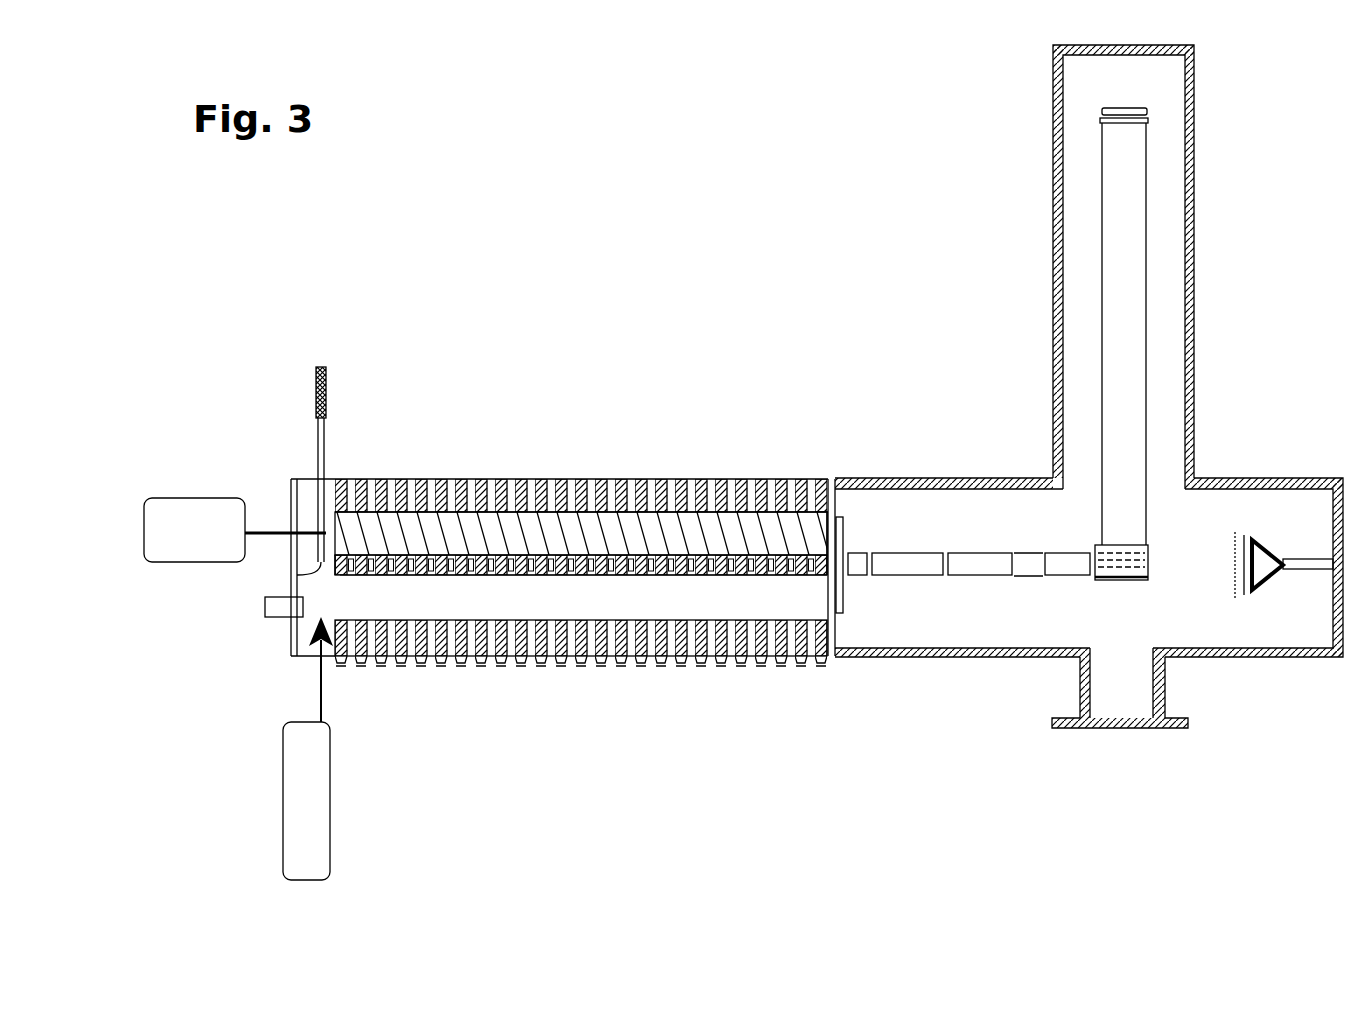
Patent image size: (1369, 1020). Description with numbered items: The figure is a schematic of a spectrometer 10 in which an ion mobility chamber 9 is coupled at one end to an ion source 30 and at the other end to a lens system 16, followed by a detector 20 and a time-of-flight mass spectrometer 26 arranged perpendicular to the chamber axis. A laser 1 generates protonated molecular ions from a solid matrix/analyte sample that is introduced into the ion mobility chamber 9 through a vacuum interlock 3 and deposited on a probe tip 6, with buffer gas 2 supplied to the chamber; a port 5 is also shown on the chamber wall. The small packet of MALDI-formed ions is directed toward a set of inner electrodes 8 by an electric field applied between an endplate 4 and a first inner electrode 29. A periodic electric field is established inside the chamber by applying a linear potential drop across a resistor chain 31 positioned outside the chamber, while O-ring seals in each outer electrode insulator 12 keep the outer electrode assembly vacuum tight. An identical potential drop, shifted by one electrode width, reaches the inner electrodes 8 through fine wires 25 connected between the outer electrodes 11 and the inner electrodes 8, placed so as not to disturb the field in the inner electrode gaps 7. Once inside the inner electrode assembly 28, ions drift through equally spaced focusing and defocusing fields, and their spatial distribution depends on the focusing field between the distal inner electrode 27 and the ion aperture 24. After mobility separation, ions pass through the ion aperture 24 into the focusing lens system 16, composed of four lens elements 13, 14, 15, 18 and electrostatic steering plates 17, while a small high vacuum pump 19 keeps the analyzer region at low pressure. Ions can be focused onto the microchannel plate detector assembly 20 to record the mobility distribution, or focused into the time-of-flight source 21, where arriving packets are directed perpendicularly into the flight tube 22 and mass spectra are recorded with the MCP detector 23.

The laser 1 is at (280, 825).
The buffer gas 2 is at (185, 497).
The vacuum interlock 3 is at (302, 404).
The endplate 4 is at (292, 479).
The gas port 5 is at (262, 604).
The probe tip 6 is at (291, 574).
The inner electrode gaps 7 is at (388, 582).
The inner electrodes 8 is at (477, 582).
The ion mobility chamber 9 is at (571, 680).
The spectrometer 10 is at (677, 163).
The outer electrodes 11 is at (598, 480).
The outer electrode insulator 12 is at (665, 480).
The lens element 13 is at (857, 553).
The lens element 14 is at (903, 578).
The lens element 15 is at (972, 553).
The lens system 16 is at (984, 662).
The electrostatic steering plates 17 is at (1022, 553).
The lens element 18 is at (1065, 578).
The high vacuum pump 19 is at (1120, 709).
The detector 20 is at (1265, 592).
The time-of-flight source 21 is at (1150, 562).
The flight tube 22 is at (1151, 358).
The MCP detector 23 is at (1150, 113).
The ion aperture 24 is at (848, 580).
The fine wires 25 is at (403, 542).
The time-of-flight mass spectrometer 26 is at (1043, 325).
The distal inner electrode 27 is at (820, 578).
The inner electrode assembly 28 is at (542, 591).
The first inner electrode 29 is at (343, 577).
The ion source 30 is at (317, 328).
The resistor chain 31 is at (678, 689).